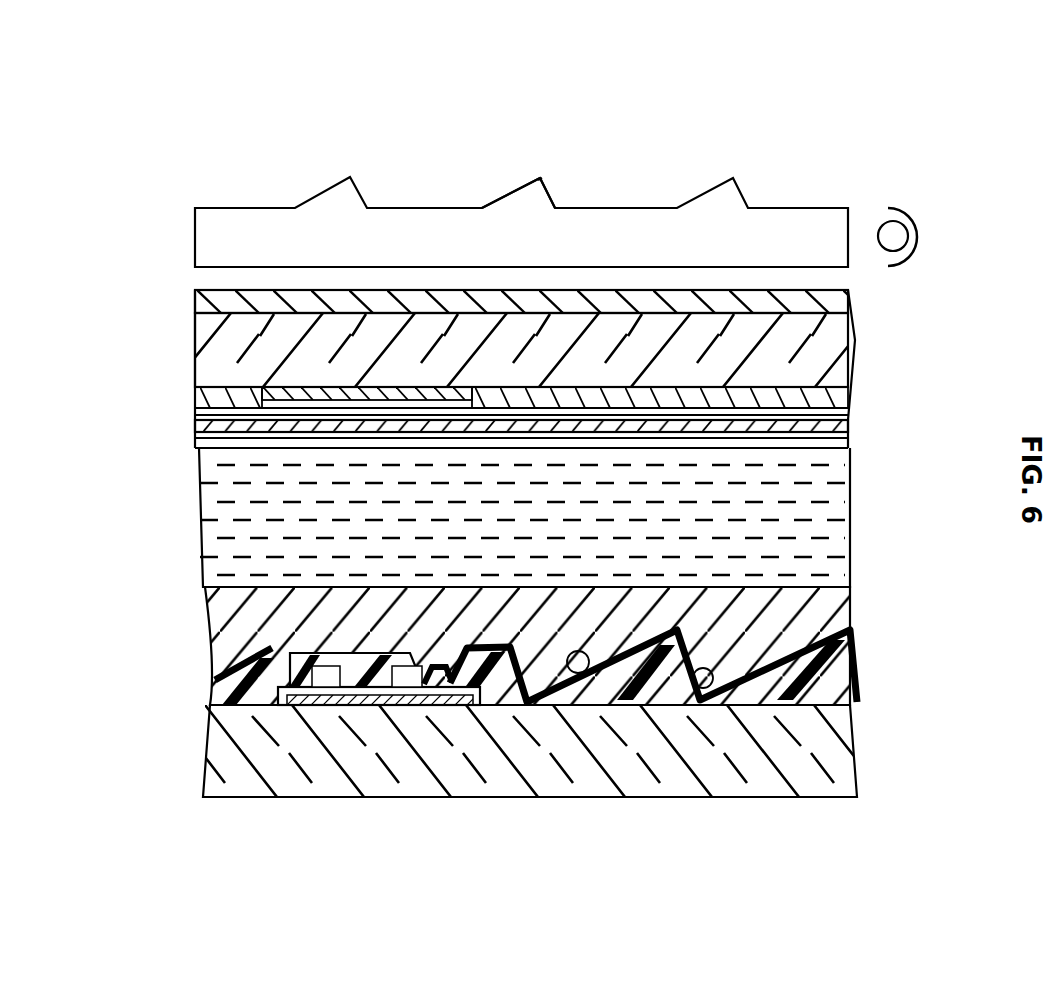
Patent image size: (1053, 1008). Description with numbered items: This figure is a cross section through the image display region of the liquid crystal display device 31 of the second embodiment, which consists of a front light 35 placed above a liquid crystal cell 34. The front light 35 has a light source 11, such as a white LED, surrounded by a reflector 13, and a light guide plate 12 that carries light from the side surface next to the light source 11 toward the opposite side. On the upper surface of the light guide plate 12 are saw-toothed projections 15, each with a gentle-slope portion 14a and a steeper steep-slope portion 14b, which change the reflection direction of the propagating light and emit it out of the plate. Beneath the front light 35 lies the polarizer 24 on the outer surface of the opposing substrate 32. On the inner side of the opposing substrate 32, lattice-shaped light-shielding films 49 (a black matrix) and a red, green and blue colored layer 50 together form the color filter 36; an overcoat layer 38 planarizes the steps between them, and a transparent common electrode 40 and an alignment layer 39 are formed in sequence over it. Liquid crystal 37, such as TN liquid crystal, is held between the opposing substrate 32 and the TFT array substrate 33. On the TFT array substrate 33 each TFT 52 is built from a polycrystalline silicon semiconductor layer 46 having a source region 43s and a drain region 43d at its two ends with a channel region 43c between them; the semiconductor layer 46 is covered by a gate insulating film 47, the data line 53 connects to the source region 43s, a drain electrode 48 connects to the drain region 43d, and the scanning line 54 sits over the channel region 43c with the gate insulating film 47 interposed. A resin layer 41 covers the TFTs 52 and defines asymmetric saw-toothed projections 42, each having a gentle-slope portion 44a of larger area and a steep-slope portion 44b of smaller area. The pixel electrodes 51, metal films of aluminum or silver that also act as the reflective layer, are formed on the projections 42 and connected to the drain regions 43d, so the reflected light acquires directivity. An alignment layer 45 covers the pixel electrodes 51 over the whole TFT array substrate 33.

The liquid crystal display device 31 is at (684, 119).
The front light 35 is at (177, 234).
The light guide plate 12 is at (247, 213).
The gentle-slope portion 14a is at (510, 195).
The steep-slope portion 14b is at (556, 193).
The projections 15 is at (528, 182).
The light source 11 is at (888, 221).
The reflector 13 is at (914, 212).
The color filter 36 is at (188, 393).
The polarizer 24 is at (852, 293).
The opposing substrate 32 is at (852, 330).
The colored layer 50 is at (556, 263).
The light-shielding films 49 is at (405, 396).
The overcoat layer 38 is at (850, 412).
The common electrode 40 is at (850, 428).
The alignment layer 39 is at (850, 448).
The liquid crystal 37 is at (840, 520).
The liquid crystal cell 34 is at (180, 515).
The alignment layer 45 is at (848, 612).
The TFT 52 is at (390, 714).
The gate insulating film 47 is at (283, 668).
The semiconductor layer 46 is at (345, 690).
The channel region 43c is at (382, 700).
The source region 43s is at (296, 700).
The drain region 43d is at (453, 700).
The data line 53 is at (323, 653).
The scanning line 54 is at (376, 653).
The drain electrode 48 is at (436, 670).
The resin layer 41 is at (536, 765).
The projections 42 is at (536, 666).
The gentle-slope portion 44a is at (582, 673).
The steep-slope portion 44b is at (705, 688).
The pixel electrode 51 is at (625, 690).
The TFT array substrate 33 is at (847, 745).